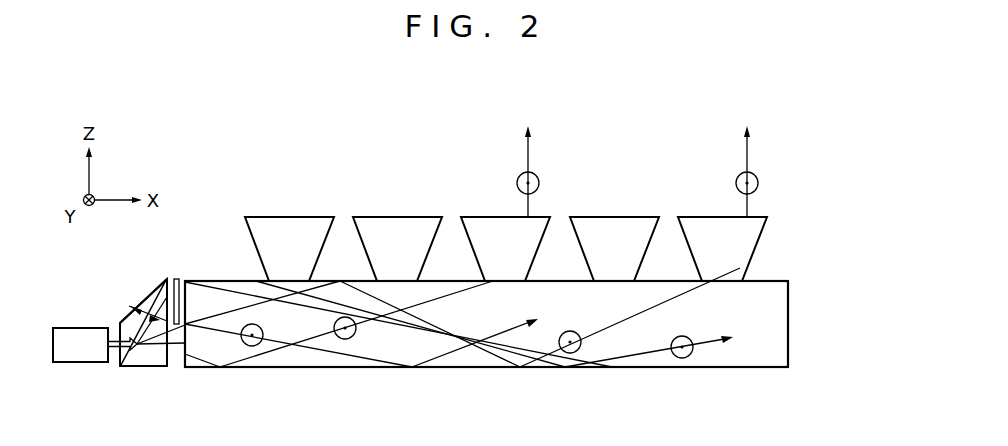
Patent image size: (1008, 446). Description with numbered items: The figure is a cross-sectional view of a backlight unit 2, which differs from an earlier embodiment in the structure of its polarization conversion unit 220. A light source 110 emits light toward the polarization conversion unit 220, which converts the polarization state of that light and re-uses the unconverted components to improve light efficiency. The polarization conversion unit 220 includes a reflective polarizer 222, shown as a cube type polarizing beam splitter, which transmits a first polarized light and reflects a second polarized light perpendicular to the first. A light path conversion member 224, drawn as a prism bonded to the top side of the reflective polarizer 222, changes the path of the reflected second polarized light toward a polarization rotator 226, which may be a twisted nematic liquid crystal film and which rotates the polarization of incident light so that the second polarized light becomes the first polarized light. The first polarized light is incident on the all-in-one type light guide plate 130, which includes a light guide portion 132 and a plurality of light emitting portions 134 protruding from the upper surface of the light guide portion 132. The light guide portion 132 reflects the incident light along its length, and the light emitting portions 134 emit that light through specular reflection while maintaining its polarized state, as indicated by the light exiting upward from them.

The backlight unit 2 is at (822, 167).
The light source 110 is at (80, 363).
The light guide plate 130 is at (548, 246).
The light guide portion 132 is at (780, 332).
The light emitting portions 134 is at (552, 203).
The polarization conversion unit 220 is at (129, 327).
The reflective polarizer 222 is at (123, 326).
The light path conversion member 224 is at (146, 300).
The polarization rotator 226 is at (176, 278).